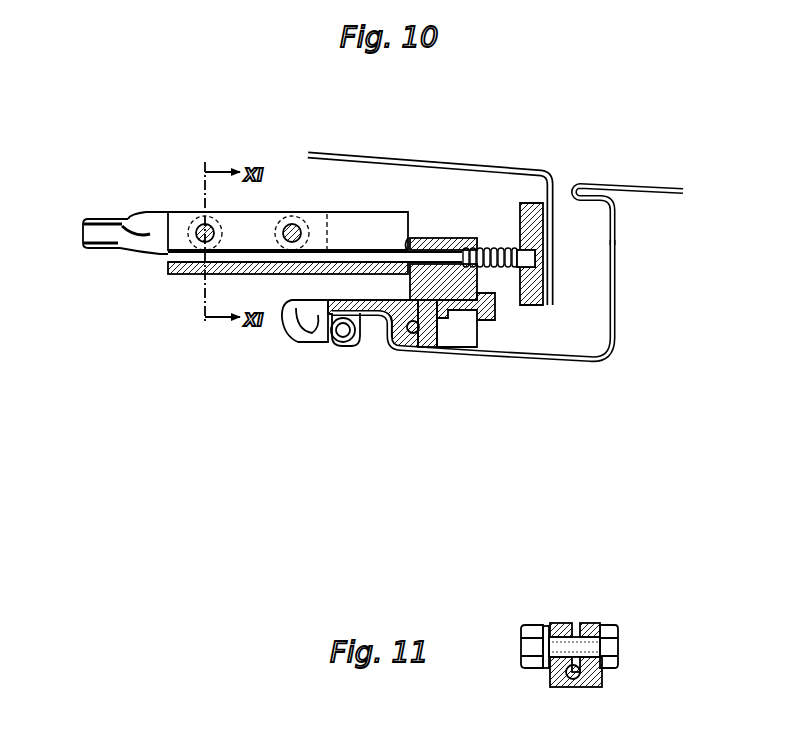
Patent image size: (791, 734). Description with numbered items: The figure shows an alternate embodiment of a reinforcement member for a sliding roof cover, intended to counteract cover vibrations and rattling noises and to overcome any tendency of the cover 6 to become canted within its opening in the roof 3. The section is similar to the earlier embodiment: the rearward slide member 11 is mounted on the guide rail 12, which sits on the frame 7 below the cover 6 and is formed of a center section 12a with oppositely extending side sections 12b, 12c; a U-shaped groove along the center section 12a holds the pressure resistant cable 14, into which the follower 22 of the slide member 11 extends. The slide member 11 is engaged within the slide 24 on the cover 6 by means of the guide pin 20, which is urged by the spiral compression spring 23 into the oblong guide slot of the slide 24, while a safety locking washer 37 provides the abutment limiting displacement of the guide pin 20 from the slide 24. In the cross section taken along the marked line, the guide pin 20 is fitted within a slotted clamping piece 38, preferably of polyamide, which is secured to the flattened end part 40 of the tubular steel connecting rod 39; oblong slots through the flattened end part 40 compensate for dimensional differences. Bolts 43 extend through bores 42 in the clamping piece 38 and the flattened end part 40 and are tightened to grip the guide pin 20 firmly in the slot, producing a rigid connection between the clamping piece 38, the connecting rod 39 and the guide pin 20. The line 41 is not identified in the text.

In FIG. 10, the roof 3 is at (632, 186).
In FIG. 10, the cover 6 is at (481, 167).
In FIG. 10, the frame 7 is at (605, 356).
In FIG. 10, the rearward slide member 11 is at (449, 238).
In FIG. 10, the guide rail 12 is at (427, 349).
In FIG. 10, the center section 12a is at (450, 338).
In FIG. 10, the side section 12b is at (462, 314).
In FIG. 10, the side section 12c is at (370, 318).
In FIG. 10, the pressure resistant cable 14 is at (400, 350).
In FIG. 10, the guide pin 20 is at (265, 274).
In FIG. 11, the guide pin 20 is at (574, 684).
In FIG. 10, the follower 22 is at (397, 300).
In FIG. 10, the spiral compression spring 23 is at (499, 271).
In FIG. 10, the slide 24 is at (524, 300).
In FIG. 10, the safety locking washer 37 is at (410, 240).
In FIG. 10, the slotted clamping piece 38 is at (369, 212).
In FIG. 11, the slotted clamping piece 38 is at (603, 678).
In FIG. 10, the connecting rod 39 is at (88, 219).
In FIG. 10, the flattened end part 40 is at (139, 220).
In FIG. 11, the flattened end part 40 is at (548, 665).
In FIG. 10, the rod 41 is at (168, 257).
In FIG. 11, the bores 42 is at (583, 623).
In FIG. 11, the bolts 43 is at (608, 641).